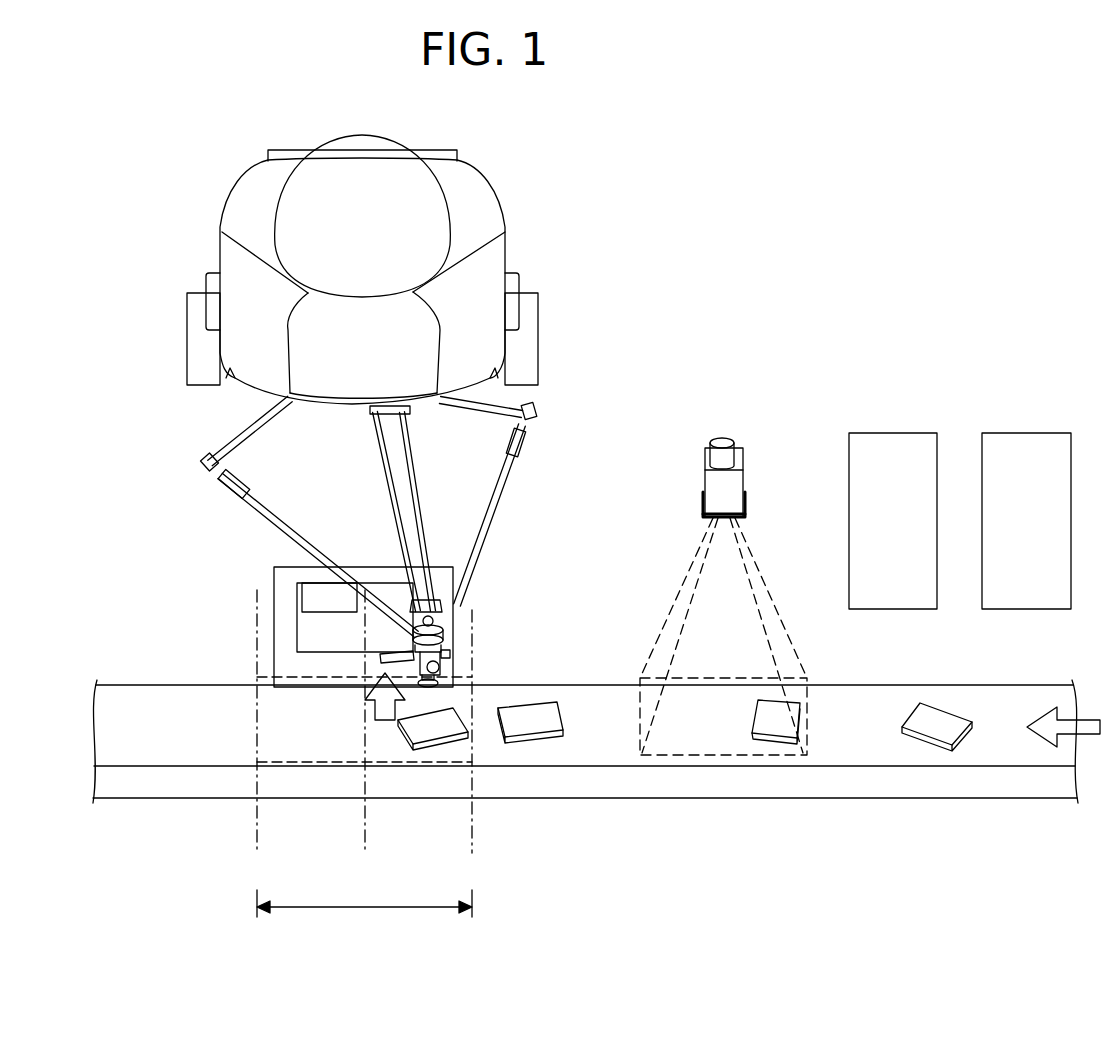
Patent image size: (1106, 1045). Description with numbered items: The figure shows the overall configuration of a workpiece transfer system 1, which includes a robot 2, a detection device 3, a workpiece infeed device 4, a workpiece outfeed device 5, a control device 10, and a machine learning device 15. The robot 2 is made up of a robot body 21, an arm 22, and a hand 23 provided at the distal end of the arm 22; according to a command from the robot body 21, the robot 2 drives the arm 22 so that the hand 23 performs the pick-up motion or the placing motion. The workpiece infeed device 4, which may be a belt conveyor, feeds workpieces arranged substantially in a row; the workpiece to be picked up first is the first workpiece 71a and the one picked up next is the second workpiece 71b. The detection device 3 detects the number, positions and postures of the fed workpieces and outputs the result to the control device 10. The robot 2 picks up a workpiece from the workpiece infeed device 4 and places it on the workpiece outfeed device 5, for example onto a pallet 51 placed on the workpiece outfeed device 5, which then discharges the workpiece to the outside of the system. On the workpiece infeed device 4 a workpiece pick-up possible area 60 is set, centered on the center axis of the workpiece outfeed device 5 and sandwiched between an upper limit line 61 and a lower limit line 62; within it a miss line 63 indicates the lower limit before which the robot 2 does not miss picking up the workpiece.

The workpiece transfer system 1 is at (950, 210).
The robot 2 is at (458, 166).
The robot body 21 is at (502, 212).
The arm 22 is at (537, 405).
The hand 23 is at (470, 606).
The detection device 3 is at (745, 470).
The workpiece infeed device 4 is at (955, 800).
The workpiece outfeed device 5 is at (270, 590).
The pallet 51 is at (297, 630).
The control device 10 is at (877, 433).
The machine learning device 15 is at (994, 433).
The workpiece pick-up possible area 60 is at (364, 915).
The upper limit line 61 is at (475, 848).
The lower limit line 62 is at (257, 850).
The miss line 63 is at (368, 815).
The first workpiece 71a is at (465, 690).
The second workpiece 71b is at (540, 732).